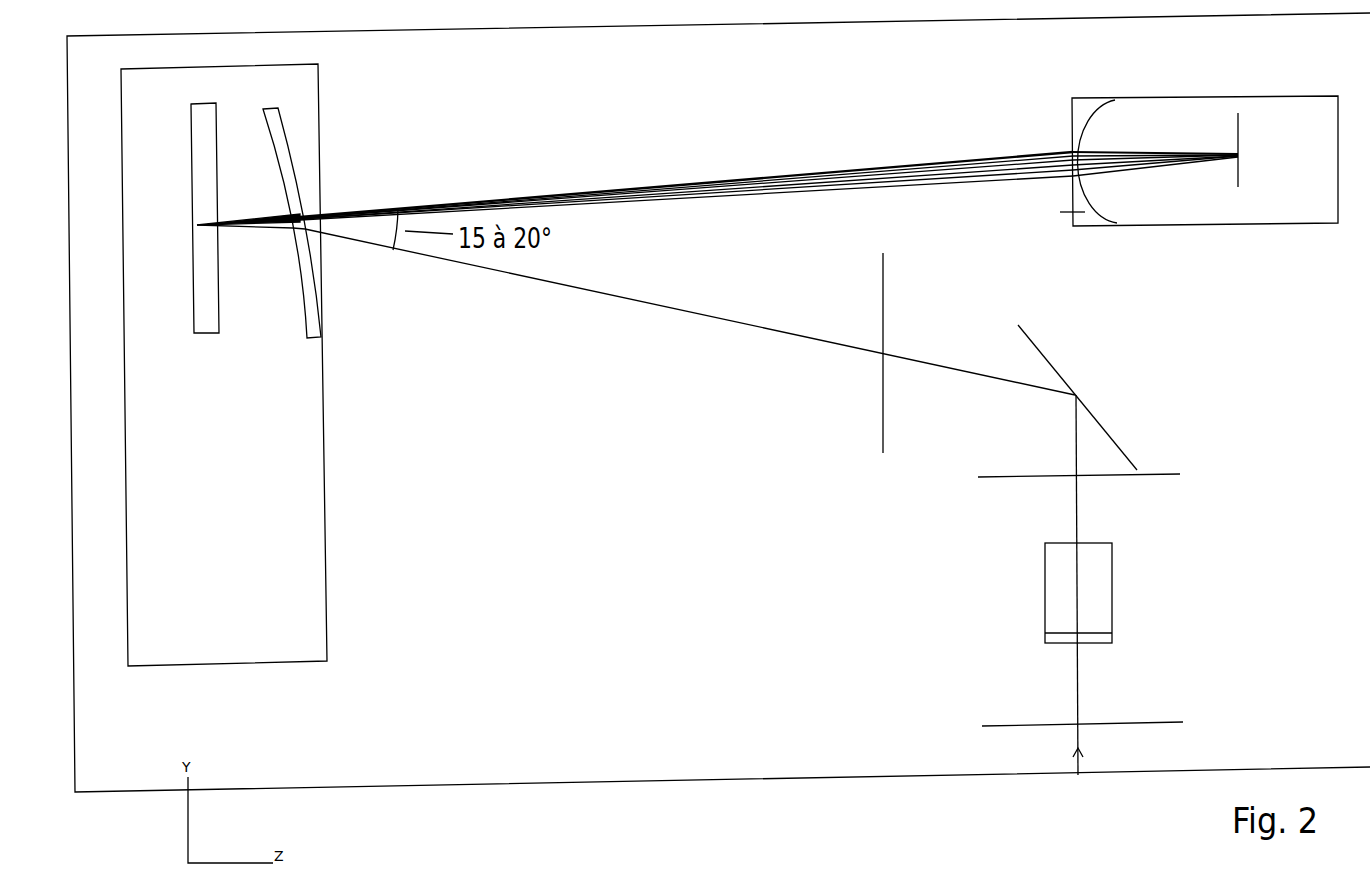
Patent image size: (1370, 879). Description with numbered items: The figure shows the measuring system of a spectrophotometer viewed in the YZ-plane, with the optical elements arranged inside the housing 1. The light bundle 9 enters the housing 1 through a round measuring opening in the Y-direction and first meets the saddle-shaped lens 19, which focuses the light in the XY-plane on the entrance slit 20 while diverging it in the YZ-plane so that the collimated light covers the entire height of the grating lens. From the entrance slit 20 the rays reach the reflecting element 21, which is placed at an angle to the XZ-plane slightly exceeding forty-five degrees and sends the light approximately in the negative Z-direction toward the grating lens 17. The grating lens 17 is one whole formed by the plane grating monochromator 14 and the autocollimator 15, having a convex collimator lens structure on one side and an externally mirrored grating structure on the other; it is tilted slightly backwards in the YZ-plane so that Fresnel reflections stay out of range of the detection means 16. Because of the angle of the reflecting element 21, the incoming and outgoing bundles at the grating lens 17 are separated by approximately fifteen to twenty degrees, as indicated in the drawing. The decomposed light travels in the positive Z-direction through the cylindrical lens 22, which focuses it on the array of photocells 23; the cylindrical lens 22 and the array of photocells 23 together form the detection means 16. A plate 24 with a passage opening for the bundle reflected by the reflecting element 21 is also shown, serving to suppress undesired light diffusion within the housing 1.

The housing 1 is at (410, 783).
The light bundle 9 is at (1078, 684).
The plane grating monochromator 14 is at (207, 333).
The autocollimator 15 is at (312, 306).
The detection means 16 is at (1204, 236).
The grating lens 17 is at (275, 293).
The saddle-shaped lens 19 is at (1090, 580).
The entrance slit 20 is at (1077, 477).
The reflecting element 21 is at (1110, 435).
The cylindrical lens 22 is at (1090, 118).
The array of photocells 23 is at (1240, 133).
The plate 24 is at (883, 410).